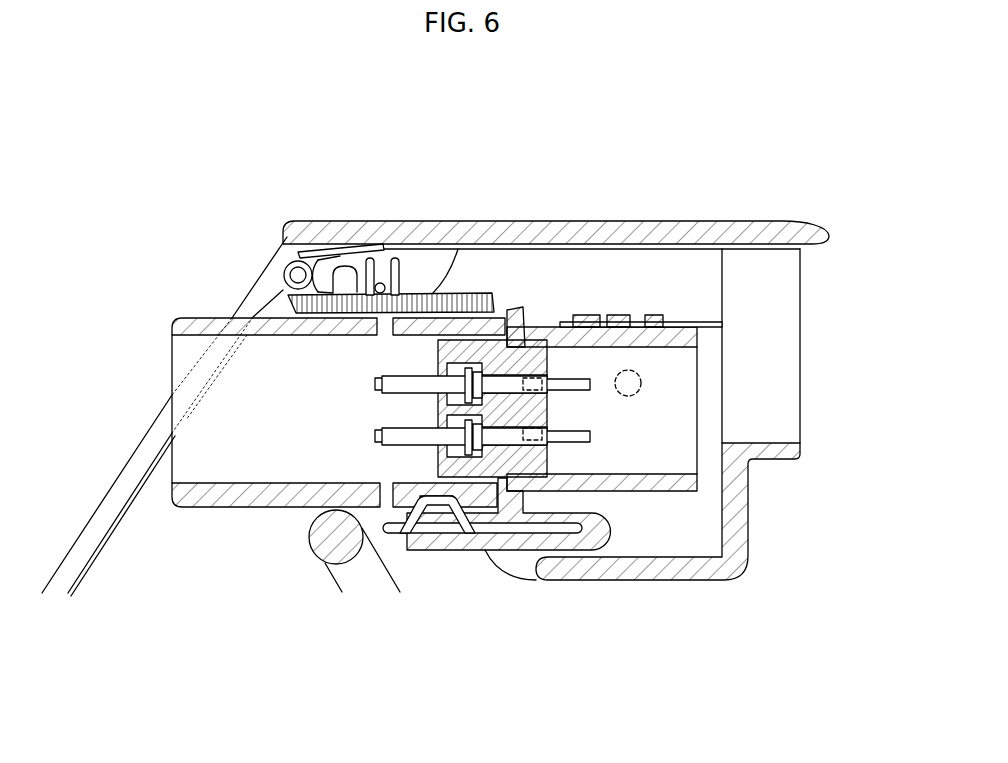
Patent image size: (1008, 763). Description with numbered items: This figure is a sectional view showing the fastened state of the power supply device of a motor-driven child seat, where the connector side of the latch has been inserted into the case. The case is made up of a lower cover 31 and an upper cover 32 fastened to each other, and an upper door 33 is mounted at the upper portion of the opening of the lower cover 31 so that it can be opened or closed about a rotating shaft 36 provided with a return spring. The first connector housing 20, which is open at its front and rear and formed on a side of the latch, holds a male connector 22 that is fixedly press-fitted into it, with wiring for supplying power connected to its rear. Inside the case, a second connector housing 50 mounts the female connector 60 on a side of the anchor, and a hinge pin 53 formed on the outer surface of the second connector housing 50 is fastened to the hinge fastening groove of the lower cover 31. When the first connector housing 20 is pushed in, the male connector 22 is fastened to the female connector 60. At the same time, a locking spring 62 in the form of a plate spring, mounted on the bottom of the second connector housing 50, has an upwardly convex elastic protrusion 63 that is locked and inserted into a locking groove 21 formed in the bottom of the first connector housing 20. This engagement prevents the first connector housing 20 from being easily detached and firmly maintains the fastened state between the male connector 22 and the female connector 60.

The first connector housing 20 is at (213, 505).
The locking groove 21 is at (392, 512).
The male connector 22 is at (438, 347).
The lower cover 31 is at (750, 501).
The upper cover 32 is at (672, 221).
The upper door 33 is at (432, 292).
The rotating shaft 36 is at (296, 276).
The second connector housing 50 is at (541, 322).
The hinge pin 53 is at (641, 381).
The female connector 60 is at (549, 456).
The locking spring 62 is at (483, 534).
The elastic protrusion 63 is at (430, 506).